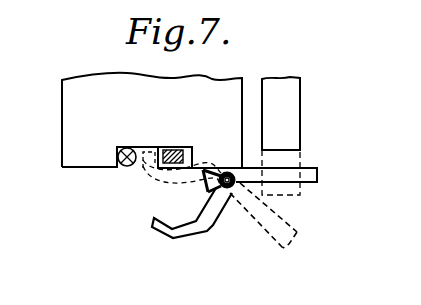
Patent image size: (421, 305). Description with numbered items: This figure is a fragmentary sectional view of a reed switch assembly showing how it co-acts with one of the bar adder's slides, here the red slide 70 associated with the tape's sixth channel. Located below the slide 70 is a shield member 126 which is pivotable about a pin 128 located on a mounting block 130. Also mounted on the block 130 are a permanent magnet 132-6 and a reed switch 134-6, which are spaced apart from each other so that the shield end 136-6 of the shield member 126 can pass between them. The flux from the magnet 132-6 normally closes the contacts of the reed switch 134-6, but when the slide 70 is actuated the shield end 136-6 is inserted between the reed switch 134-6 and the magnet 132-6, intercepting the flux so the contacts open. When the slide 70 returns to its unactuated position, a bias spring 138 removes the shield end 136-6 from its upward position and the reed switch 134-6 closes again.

The mounting block 130 is at (72, 108).
The red slide 70 is at (293, 119).
The shield member 126 is at (290, 180).
The reed switch 134-6 is at (128, 168).
The permanent magnet 132-6 is at (170, 163).
The pin 128 is at (229, 192).
The bias spring 138 is at (229, 167).
The shield end 136-6 is at (160, 237).